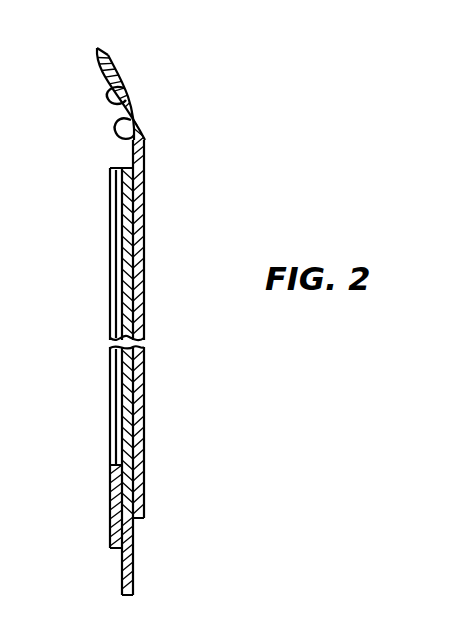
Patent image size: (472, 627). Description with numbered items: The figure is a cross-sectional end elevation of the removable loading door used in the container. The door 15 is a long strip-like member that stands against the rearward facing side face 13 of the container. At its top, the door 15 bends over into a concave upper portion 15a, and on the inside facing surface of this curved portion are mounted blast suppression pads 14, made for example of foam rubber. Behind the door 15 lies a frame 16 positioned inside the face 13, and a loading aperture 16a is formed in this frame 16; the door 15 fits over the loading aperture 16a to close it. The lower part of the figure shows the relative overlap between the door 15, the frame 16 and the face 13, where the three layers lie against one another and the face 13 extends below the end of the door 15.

The rearward facing side face 13 is at (130, 567).
The blast suppression pads 14 is at (140, 133).
The removable door 15 is at (140, 201).
The concave upper portion 15a is at (122, 50).
The frame 16 is at (108, 250).
The loading aperture 16a is at (128, 303).